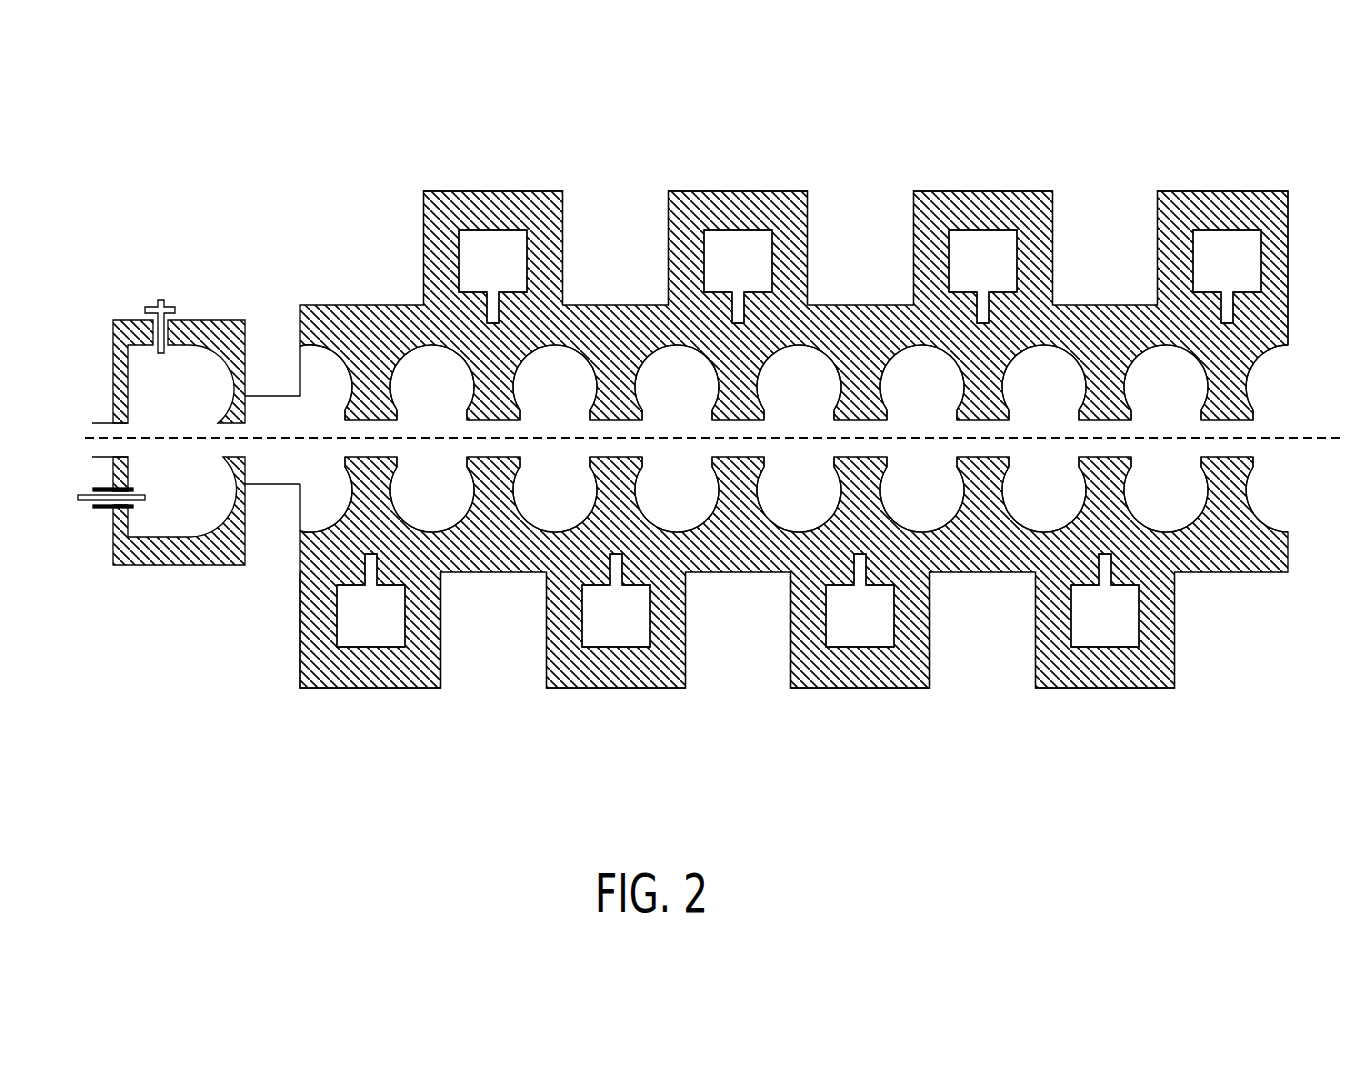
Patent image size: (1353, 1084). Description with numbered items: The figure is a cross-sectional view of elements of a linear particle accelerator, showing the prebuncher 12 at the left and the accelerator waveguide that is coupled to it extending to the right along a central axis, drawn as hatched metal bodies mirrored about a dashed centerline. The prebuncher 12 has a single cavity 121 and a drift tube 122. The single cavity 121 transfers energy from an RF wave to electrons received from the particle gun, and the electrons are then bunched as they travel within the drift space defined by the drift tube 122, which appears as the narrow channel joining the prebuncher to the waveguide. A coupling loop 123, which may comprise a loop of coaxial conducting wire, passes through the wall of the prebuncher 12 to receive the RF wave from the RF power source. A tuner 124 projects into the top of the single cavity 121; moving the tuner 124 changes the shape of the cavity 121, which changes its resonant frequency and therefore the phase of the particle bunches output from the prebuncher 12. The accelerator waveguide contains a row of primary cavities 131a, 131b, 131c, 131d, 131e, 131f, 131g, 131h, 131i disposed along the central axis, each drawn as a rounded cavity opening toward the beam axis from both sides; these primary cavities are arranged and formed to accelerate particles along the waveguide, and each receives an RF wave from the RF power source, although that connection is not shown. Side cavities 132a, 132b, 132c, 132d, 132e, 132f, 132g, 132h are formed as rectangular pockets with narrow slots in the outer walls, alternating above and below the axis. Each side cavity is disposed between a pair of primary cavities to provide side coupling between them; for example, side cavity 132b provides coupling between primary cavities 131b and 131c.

The prebuncher 12 is at (224, 248).
The single cavity 121 is at (189, 352).
The drift tube 122 is at (250, 486).
The coupling loop 123 is at (92, 492).
The tuner 124 is at (161, 302).
The primary cavity 131a is at (333, 377).
The primary cavity 131b is at (422, 375).
The primary cavity 131c is at (548, 498).
The primary cavity 131d is at (662, 377).
The primary cavity 131e is at (795, 498).
The primary cavity 131f is at (905, 377).
The primary cavity 131g is at (1042, 500).
The primary cavity 131h is at (1155, 380).
The primary cavity 131i is at (1267, 495).
The side cavity 132a is at (369, 632).
The side cavity 132b is at (490, 247).
The side cavity 132c is at (613, 632).
The side cavity 132d is at (735, 247).
The side cavity 132e is at (858, 632).
The side cavity 132f is at (980, 247).
The side cavity 132g is at (1102, 632).
The side cavity 132h is at (1222, 247).